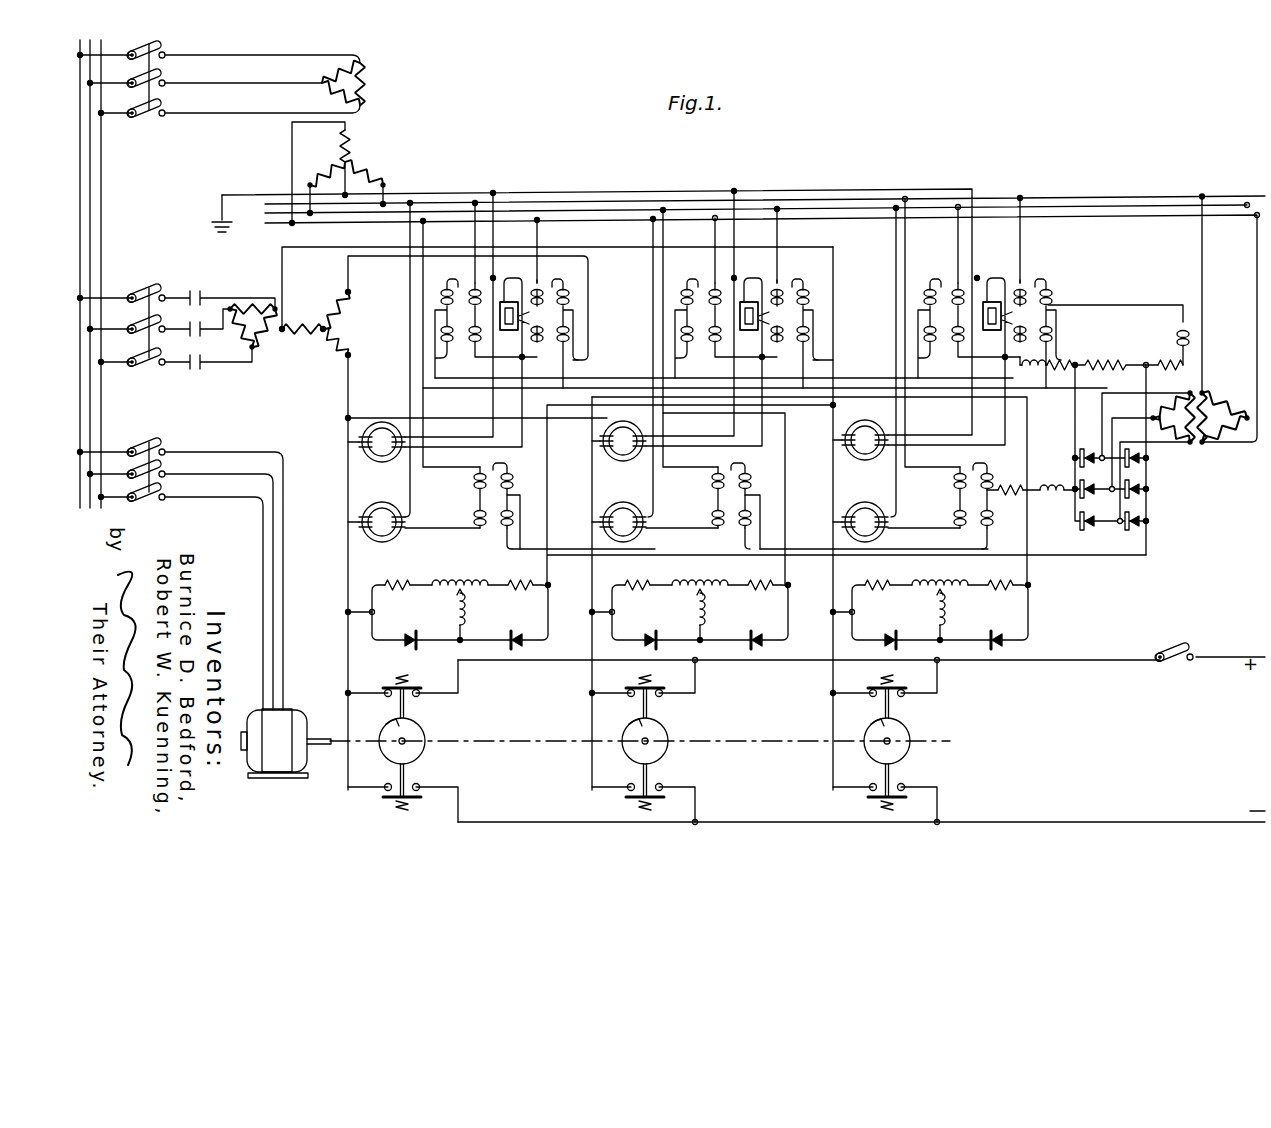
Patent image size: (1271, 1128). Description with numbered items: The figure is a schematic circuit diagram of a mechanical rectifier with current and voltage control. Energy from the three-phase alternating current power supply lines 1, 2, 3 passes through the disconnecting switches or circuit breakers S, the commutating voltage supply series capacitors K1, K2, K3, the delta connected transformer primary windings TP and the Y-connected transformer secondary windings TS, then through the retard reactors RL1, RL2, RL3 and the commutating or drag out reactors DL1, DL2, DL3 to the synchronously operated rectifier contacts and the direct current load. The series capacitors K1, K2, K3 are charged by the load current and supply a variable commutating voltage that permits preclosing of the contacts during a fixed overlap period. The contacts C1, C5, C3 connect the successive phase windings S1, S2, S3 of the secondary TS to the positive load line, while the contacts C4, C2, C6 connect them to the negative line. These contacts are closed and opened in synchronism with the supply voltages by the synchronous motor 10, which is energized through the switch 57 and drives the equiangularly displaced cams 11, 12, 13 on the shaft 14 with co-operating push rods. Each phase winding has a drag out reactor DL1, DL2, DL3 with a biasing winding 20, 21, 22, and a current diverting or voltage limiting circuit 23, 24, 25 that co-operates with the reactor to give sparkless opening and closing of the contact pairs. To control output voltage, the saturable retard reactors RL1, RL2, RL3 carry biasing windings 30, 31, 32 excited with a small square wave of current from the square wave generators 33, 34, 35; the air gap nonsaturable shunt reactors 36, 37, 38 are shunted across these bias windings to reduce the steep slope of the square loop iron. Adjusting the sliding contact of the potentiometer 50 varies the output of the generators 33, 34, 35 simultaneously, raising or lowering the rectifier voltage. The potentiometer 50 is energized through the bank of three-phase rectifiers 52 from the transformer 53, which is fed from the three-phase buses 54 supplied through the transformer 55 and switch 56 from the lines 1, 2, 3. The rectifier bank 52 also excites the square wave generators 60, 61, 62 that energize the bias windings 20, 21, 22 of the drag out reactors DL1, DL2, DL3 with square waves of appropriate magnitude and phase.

The alternating current power supply line 1 is at (101, 158).
The alternating current power supply line 2 is at (90, 184).
The alternating current power supply line 3 is at (80, 212).
The synchronous motor 10 is at (292, 712).
The cam 11 is at (410, 735).
The cam 12 is at (654, 730).
The cam 13 is at (896, 730).
The shaft 14 is at (726, 741).
The biasing winding 20 is at (379, 522).
The biasing winding 21 is at (863, 522).
The biasing winding 22 is at (620, 522).
The current diverting or voltage limiting circuit 23 is at (472, 581).
The current diverting or voltage limiting circuit 24 is at (952, 581).
The current diverting or voltage limiting circuit 25 is at (712, 581).
The magnetization biasing winding 30 is at (367, 449).
The magnetization biasing winding 31 is at (851, 447).
The magnetization biasing winding 32 is at (608, 448).
The square wave generator 33 is at (570, 273).
The square wave generator 34 is at (1048, 267).
The square wave generator 35 is at (811, 270).
The air gap nonsaturable shunt reactor 36 is at (510, 302).
The air gap nonsaturable shunt reactor 37 is at (750, 302).
The air gap nonsaturable shunt reactor 38 is at (993, 302).
The potentiometer 50 is at (1110, 383).
The bank of three-phase rectifiers 52 is at (1118, 548).
The transformer 53 is at (1203, 466).
The three-phase buses 54 is at (1138, 203).
The transformer 55 is at (378, 131).
The switch 56 is at (150, 120).
The switch 57 is at (152, 447).
The square wave generator 60 is at (536, 483).
The square wave generator 61 is at (1018, 469).
The square wave generator 62 is at (778, 483).
The disconnecting switches or circuit breakers S is at (142, 292).
The commutating voltage supply series capacitor K1 is at (194, 370).
The commutating voltage supply series capacitor K2 is at (200, 328).
The commutating voltage supply series capacitor K3 is at (193, 290).
The delta connected transformer primary windings TP is at (253, 327).
The phase winding S1 is at (326, 351).
The phase winding S2 is at (305, 327).
The phase winding S3 is at (343, 310).
The Y-connected transformer secondary windings TS is at (335, 330).
The retard reactor RL1 is at (407, 460).
The retard reactor RL2 is at (890, 459).
The retard reactor RL3 is at (648, 460).
The drag out reactor DL1 is at (418, 524).
The drag out reactor DL2 is at (901, 524).
The drag out reactor DL3 is at (659, 524).
The rectifier contact C1 is at (402, 689).
The rectifier contact C2 is at (645, 794).
The rectifier contact C3 is at (885, 688).
The rectifier contact C4 is at (403, 793).
The rectifier contact C5 is at (644, 688).
The rectifier contact C6 is at (886, 794).